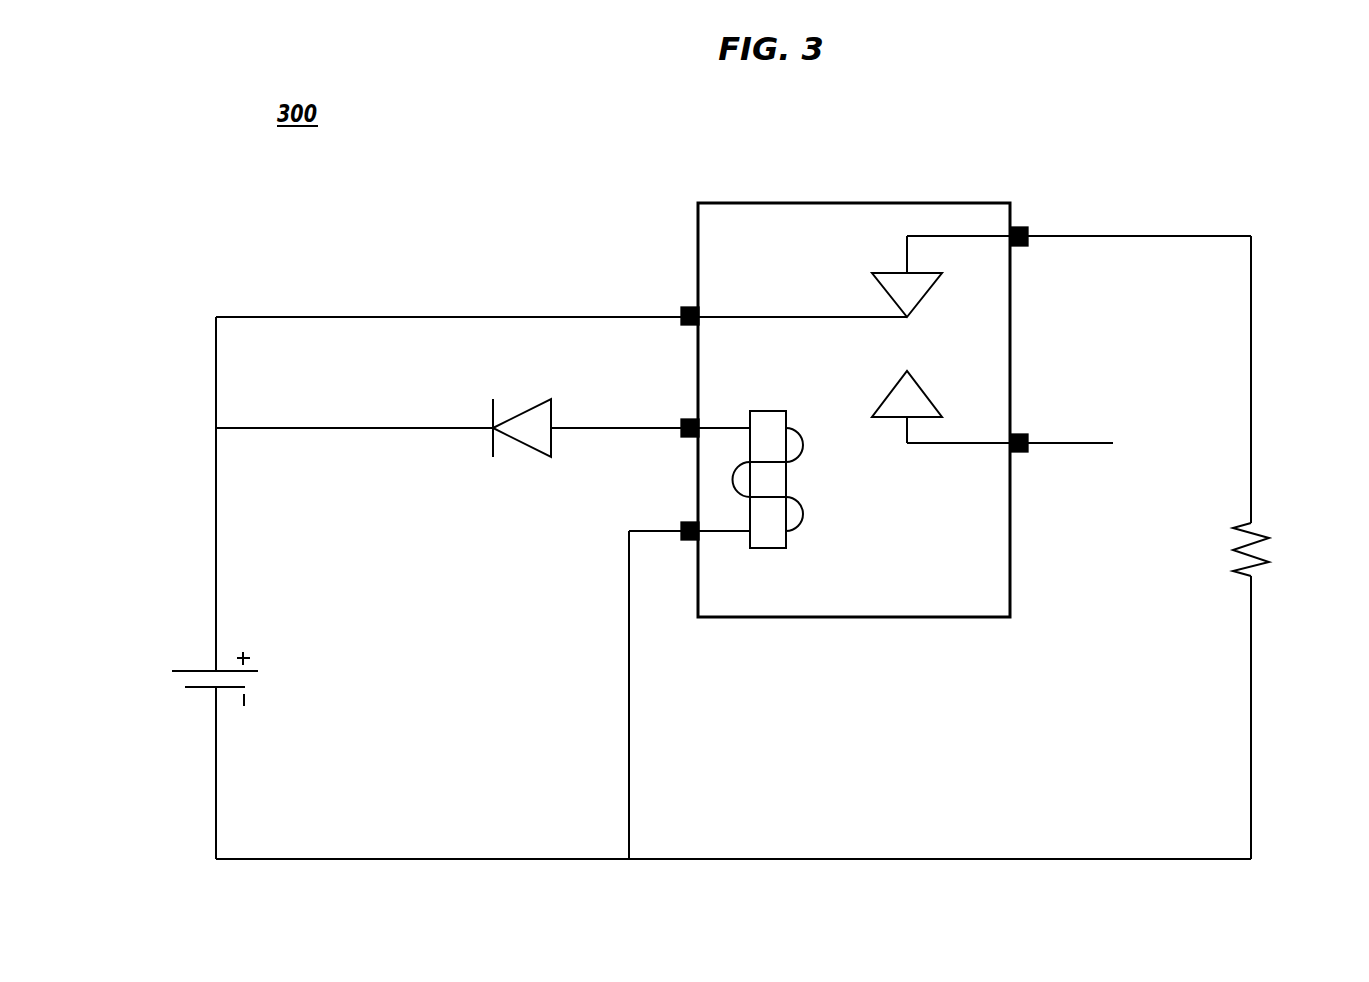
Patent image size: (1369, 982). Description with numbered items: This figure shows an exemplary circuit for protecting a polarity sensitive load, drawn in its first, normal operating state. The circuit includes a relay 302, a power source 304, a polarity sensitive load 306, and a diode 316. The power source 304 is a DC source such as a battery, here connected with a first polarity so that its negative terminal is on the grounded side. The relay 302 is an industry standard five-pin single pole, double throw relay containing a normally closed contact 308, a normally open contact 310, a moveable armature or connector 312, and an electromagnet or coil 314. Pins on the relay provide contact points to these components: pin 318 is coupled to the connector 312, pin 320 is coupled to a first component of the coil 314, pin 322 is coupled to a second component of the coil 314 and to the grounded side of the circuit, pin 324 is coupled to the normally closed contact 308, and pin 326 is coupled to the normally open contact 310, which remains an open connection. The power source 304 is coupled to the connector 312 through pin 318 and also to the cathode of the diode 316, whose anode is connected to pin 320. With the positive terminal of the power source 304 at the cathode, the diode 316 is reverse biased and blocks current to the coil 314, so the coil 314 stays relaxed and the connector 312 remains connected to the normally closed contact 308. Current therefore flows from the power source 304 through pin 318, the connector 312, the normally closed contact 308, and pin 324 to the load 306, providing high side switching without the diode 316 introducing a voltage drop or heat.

The relay 302 is at (825, 190).
The power source 304 is at (193, 647).
The polarity sensitive load 306 is at (1280, 538).
The normally closed contact 308 is at (923, 293).
The normally open contact 310 is at (933, 403).
The connector 312 is at (778, 317).
The coil 314 is at (787, 477).
The diode 316 is at (527, 399).
The pin 318 is at (677, 300).
The pin 320 is at (677, 411).
The pin 322 is at (677, 513).
The pin 324 is at (1035, 221).
The pin 326 is at (1025, 428).